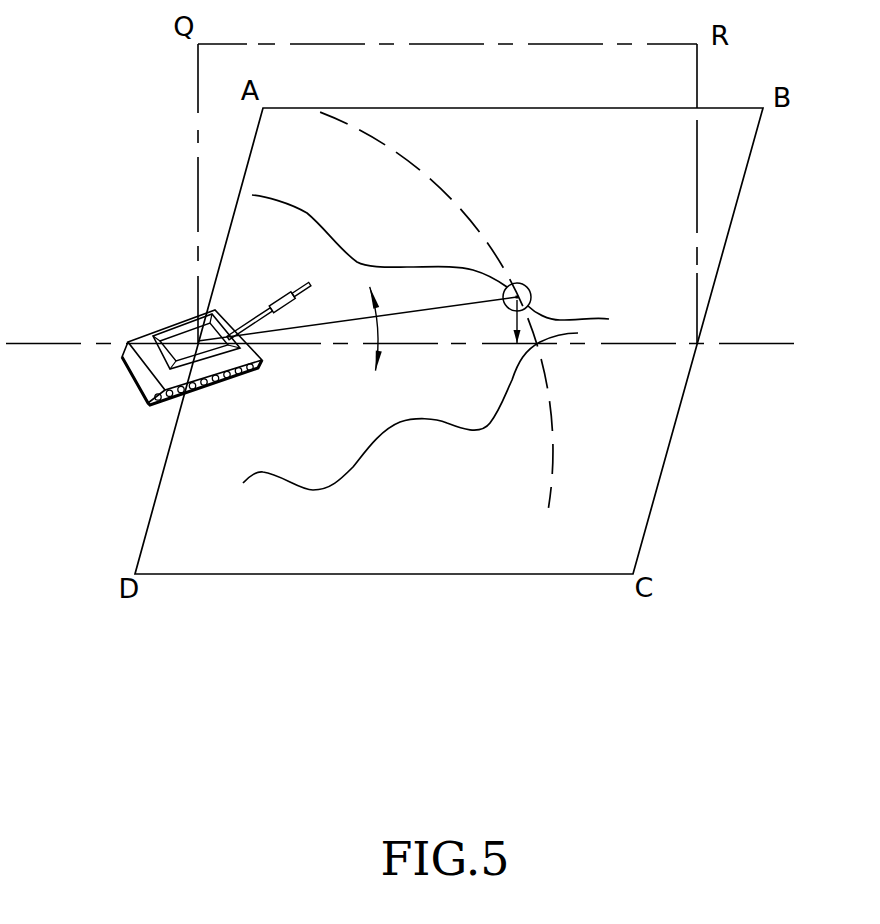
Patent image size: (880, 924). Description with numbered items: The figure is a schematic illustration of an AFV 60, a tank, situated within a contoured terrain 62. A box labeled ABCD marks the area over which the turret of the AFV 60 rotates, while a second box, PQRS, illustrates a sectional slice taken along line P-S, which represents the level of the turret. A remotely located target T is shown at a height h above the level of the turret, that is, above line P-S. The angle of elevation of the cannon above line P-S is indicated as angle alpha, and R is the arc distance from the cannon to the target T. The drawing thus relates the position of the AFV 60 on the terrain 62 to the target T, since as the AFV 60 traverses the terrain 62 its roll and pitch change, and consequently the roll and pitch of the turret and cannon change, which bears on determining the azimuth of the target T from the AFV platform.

The AFV 60 is at (142, 367).
The contoured terrain 62 is at (453, 516).
The point P is at (198, 341).
The target T is at (528, 283).
The point S is at (698, 343).
The arc distance R is at (403, 158).
The height h is at (507, 316).